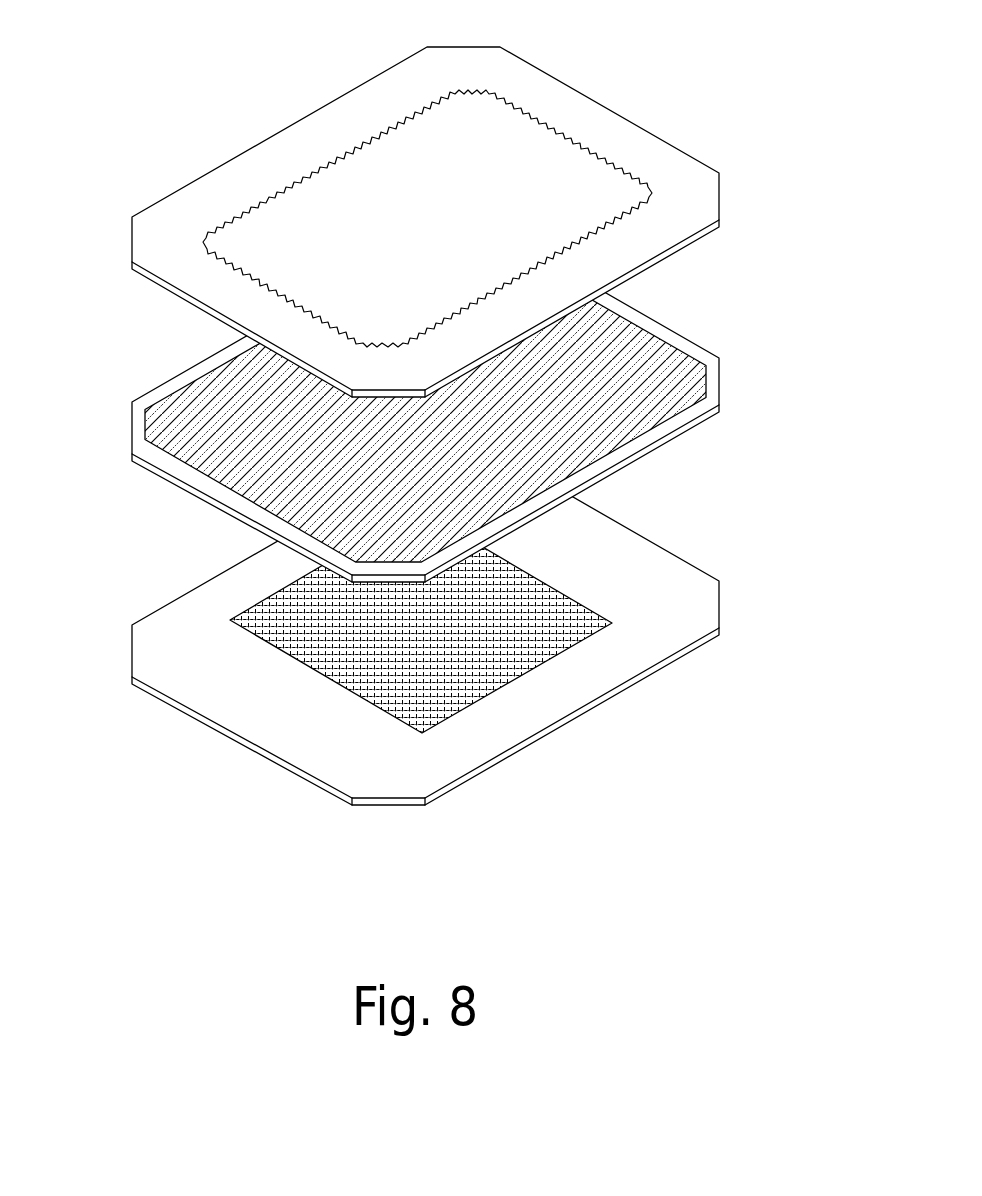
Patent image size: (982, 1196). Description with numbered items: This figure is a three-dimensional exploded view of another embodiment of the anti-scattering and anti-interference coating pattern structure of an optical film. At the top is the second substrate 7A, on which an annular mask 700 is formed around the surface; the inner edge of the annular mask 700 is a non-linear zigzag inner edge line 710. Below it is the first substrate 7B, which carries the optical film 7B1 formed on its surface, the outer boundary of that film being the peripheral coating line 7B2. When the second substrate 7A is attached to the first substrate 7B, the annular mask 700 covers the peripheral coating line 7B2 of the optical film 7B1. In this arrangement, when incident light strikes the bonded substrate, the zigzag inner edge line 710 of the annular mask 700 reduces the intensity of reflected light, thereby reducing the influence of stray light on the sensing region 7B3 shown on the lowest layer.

The annular mask 700 is at (258, 162).
The zigzag inner edge line 710 is at (413, 122).
The second substrate 7A is at (480, 207).
The first substrate 7B is at (427, 407).
The optical film 7B1 is at (193, 430).
The peripheral coating line 7B2 is at (190, 387).
The sensing region 7B3 is at (330, 637).